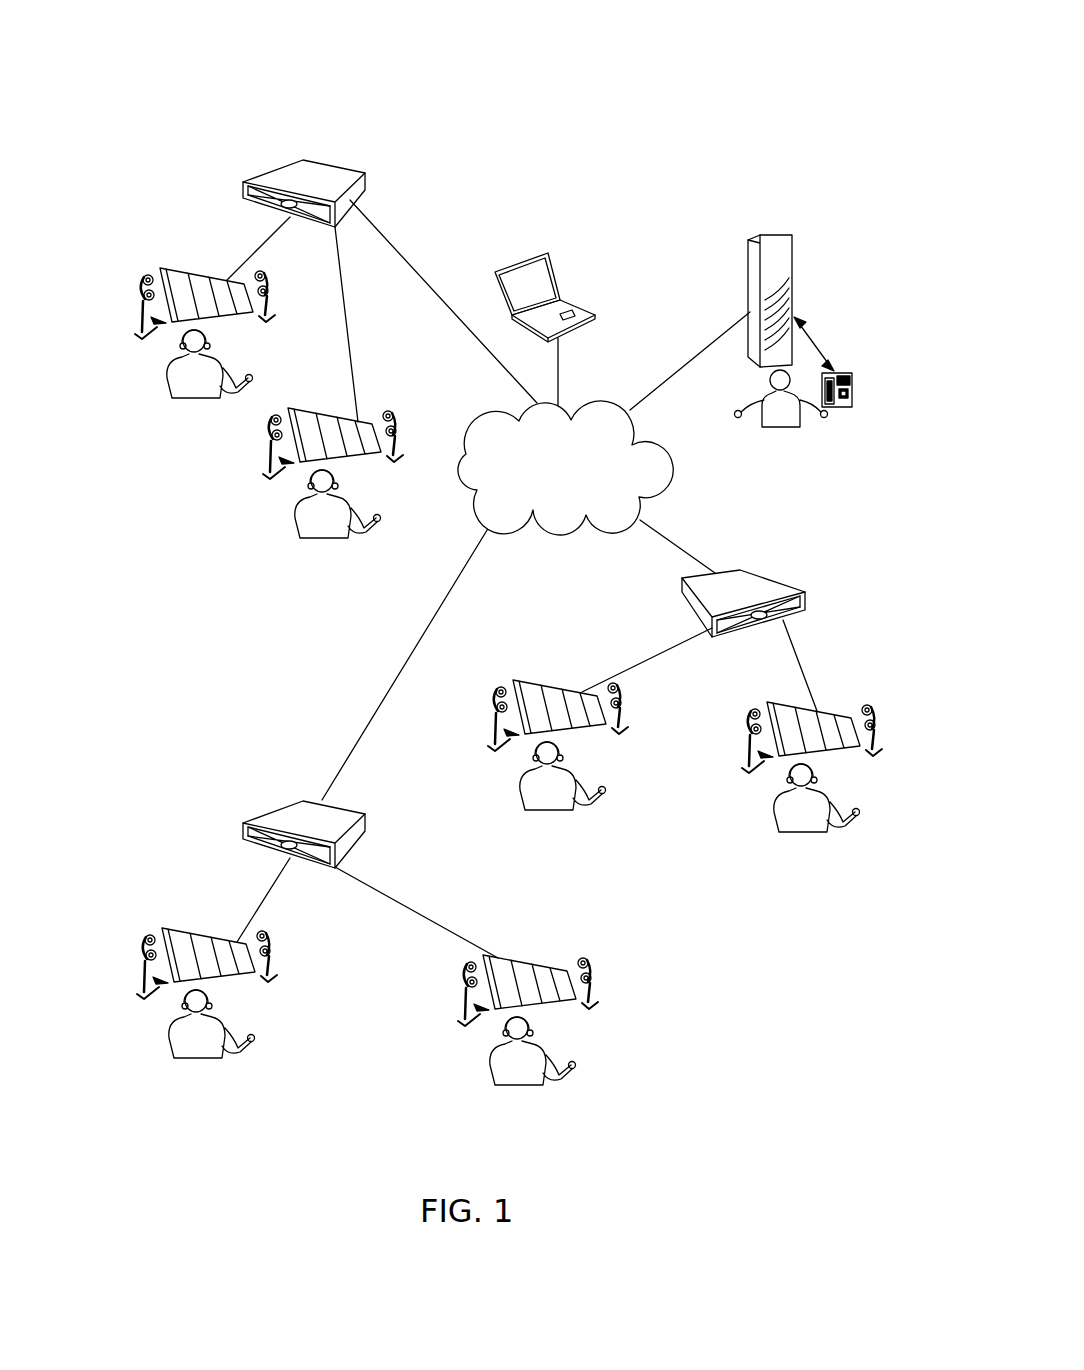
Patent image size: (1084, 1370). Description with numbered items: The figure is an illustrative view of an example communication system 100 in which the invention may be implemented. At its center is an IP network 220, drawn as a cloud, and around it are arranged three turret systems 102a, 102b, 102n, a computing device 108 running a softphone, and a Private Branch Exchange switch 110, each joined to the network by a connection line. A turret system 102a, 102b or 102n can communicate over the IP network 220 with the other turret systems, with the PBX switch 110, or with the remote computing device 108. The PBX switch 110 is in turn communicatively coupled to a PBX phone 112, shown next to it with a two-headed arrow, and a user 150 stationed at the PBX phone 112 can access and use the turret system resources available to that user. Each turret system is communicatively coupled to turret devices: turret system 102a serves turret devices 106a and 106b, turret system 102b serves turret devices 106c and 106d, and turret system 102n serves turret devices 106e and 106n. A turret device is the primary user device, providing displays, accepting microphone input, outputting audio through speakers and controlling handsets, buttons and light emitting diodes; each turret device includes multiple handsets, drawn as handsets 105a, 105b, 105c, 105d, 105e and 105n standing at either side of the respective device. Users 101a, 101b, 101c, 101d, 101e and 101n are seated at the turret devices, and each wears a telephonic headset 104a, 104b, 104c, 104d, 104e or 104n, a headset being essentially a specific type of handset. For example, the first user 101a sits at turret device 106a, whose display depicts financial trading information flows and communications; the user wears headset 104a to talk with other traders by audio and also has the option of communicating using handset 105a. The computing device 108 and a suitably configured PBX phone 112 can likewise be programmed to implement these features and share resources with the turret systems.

The communication system 100 is at (218, 48).
The user 101a is at (190, 398).
The user 101b is at (320, 538).
The user 101c is at (195, 1058).
The user 101d is at (520, 1085).
The user 101e is at (550, 810).
The user 101n is at (805, 832).
The turret system 102a is at (272, 176).
The turret system 102b is at (280, 810).
The turret system 102n is at (723, 568).
The telephonic headset 104a is at (181, 348).
The telephonic headset 104b is at (305, 483).
The telephonic headset 104c is at (182, 1005).
The telephonic headset 104d is at (505, 1032).
The telephonic headset 104e is at (532, 755).
The telephonic headset 104n is at (787, 778).
The handset 105a is at (133, 283).
The handset 105b is at (405, 420).
The handset 105c is at (143, 947).
The handset 105d is at (463, 980).
The handset 105e is at (490, 698).
The handset 105n is at (872, 706).
The turret device 106a is at (214, 268).
The turret device 106b is at (370, 422).
The turret device 106c is at (234, 940).
The turret device 106d is at (541, 965).
The turret device 106e is at (573, 689).
The turret device 106n is at (828, 713).
The computing device 108 is at (552, 268).
The PBX switch 110 is at (748, 256).
The PBX phone 112 is at (841, 369).
The user 150 is at (778, 428).
The IP network 220 is at (555, 537).